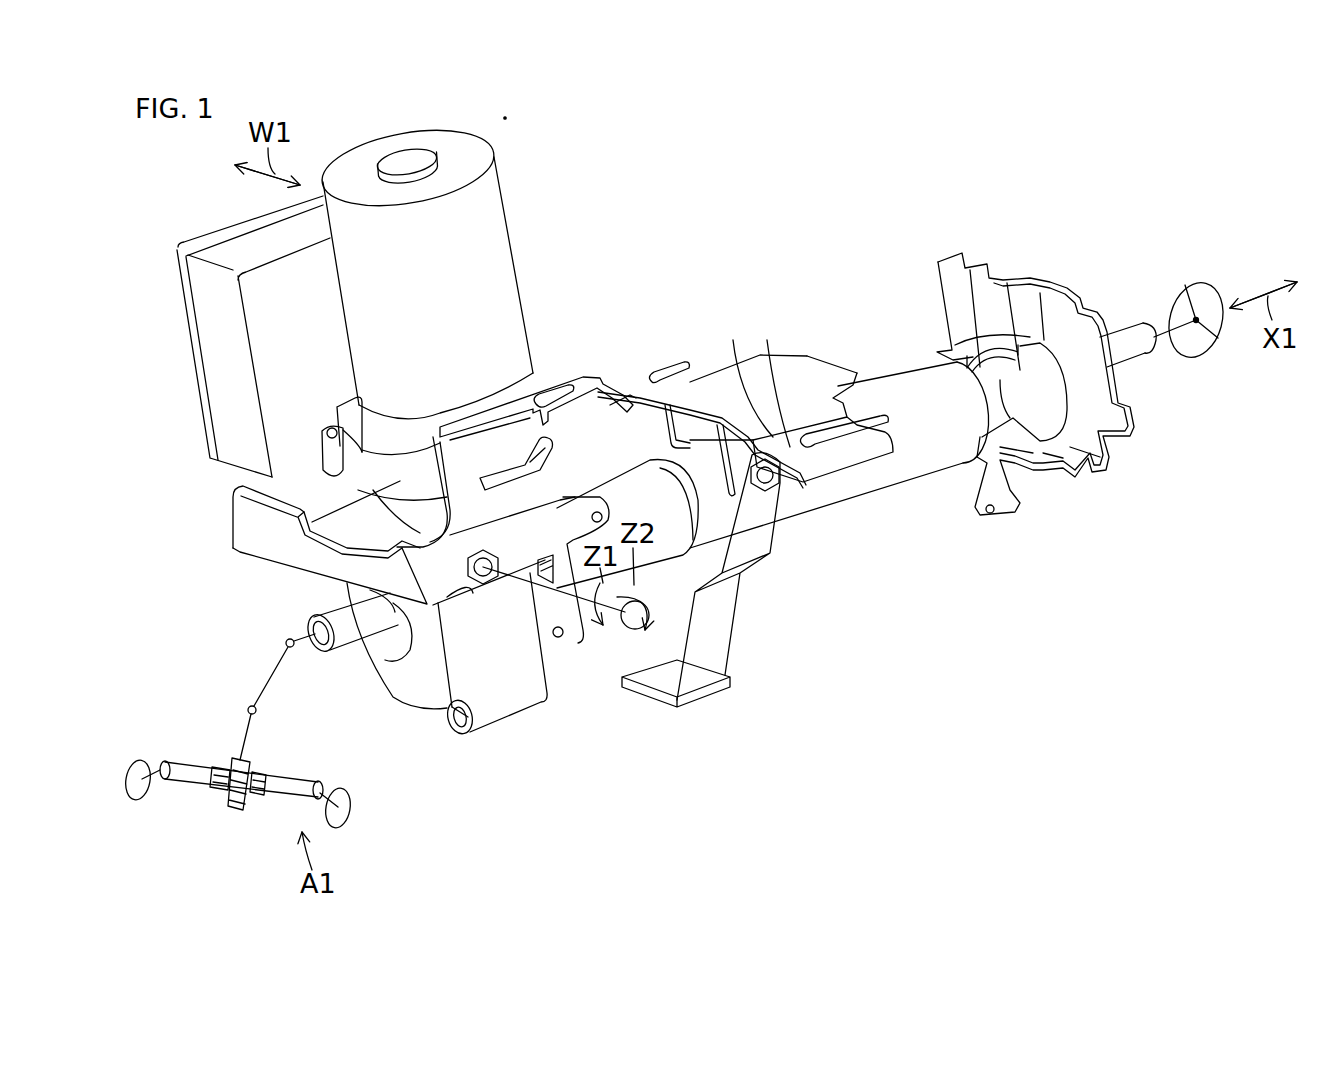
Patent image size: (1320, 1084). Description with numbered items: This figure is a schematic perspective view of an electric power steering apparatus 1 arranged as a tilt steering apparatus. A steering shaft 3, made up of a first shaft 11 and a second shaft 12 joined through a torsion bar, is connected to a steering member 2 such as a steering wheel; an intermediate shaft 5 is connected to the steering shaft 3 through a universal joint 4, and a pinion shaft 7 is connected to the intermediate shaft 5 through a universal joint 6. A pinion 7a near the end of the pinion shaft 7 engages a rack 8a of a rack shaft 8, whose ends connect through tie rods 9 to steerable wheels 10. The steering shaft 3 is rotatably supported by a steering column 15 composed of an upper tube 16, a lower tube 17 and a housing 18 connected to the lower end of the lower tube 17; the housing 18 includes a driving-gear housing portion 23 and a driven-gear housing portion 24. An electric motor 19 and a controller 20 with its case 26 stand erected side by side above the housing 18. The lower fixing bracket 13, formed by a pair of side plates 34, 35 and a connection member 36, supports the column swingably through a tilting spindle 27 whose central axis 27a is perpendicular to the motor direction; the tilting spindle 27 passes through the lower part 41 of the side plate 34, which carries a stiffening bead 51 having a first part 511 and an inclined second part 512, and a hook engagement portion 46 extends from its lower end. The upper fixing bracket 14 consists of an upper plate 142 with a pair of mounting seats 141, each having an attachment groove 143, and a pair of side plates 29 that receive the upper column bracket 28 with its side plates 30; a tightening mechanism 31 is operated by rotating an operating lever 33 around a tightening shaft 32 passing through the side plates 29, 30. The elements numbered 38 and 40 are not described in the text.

The electric power steering apparatus 1 is at (1148, 272).
The steering member 2 is at (1200, 290).
The steering shaft 3 is at (1120, 330).
The universal joint 4 is at (293, 650).
The intermediate shaft 5 is at (270, 672).
The universal joint 6 is at (245, 707).
The pinion shaft 7 is at (240, 738).
The pinion 7a is at (237, 812).
The rack shaft 8 is at (298, 778).
The rack 8a is at (262, 798).
The tie rod 9 is at (152, 772).
The steerable wheel 10 is at (132, 760).
The first shaft 11 is at (1140, 348).
The second shaft 12 is at (345, 640).
The lower fixing bracket 13 is at (585, 382).
The upper fixing bracket 14 is at (794, 366).
The steering column 15 is at (886, 370).
The upper tube 16 is at (905, 465).
The lower tube 17 is at (660, 556).
The housing 18 is at (523, 708).
The electric motor 19 is at (490, 231).
The controller 20 is at (225, 370).
The driving-gear housing portion 23 is at (418, 703).
The driven-gear housing portion 24 is at (490, 708).
The case 26 is at (202, 308).
The tilting spindle 27 is at (488, 580).
The central axis 27a is at (615, 625).
The upper column bracket 28 is at (700, 418).
The side plates 29 is at (636, 396).
The side plates 30 is at (675, 458).
The tightening mechanism 31 is at (705, 692).
The tightening shaft 32 is at (777, 488).
The operating lever 33 is at (718, 635).
The side plate 34 is at (493, 447).
The side plate 35 is at (262, 512).
The connection member 36 is at (275, 546).
The upper plate 38 is at (572, 378).
The slot 40 is at (552, 383).
The lower part 41 is at (473, 605).
The hook engagement portion 46 is at (540, 630).
The stiffening bead 51 is at (488, 478).
The first part 511 is at (520, 474).
The second part 512 is at (560, 452).
The mounting seats 141 is at (650, 385).
The upper plate 142 is at (825, 372).
The attachment groove 143 is at (676, 362).